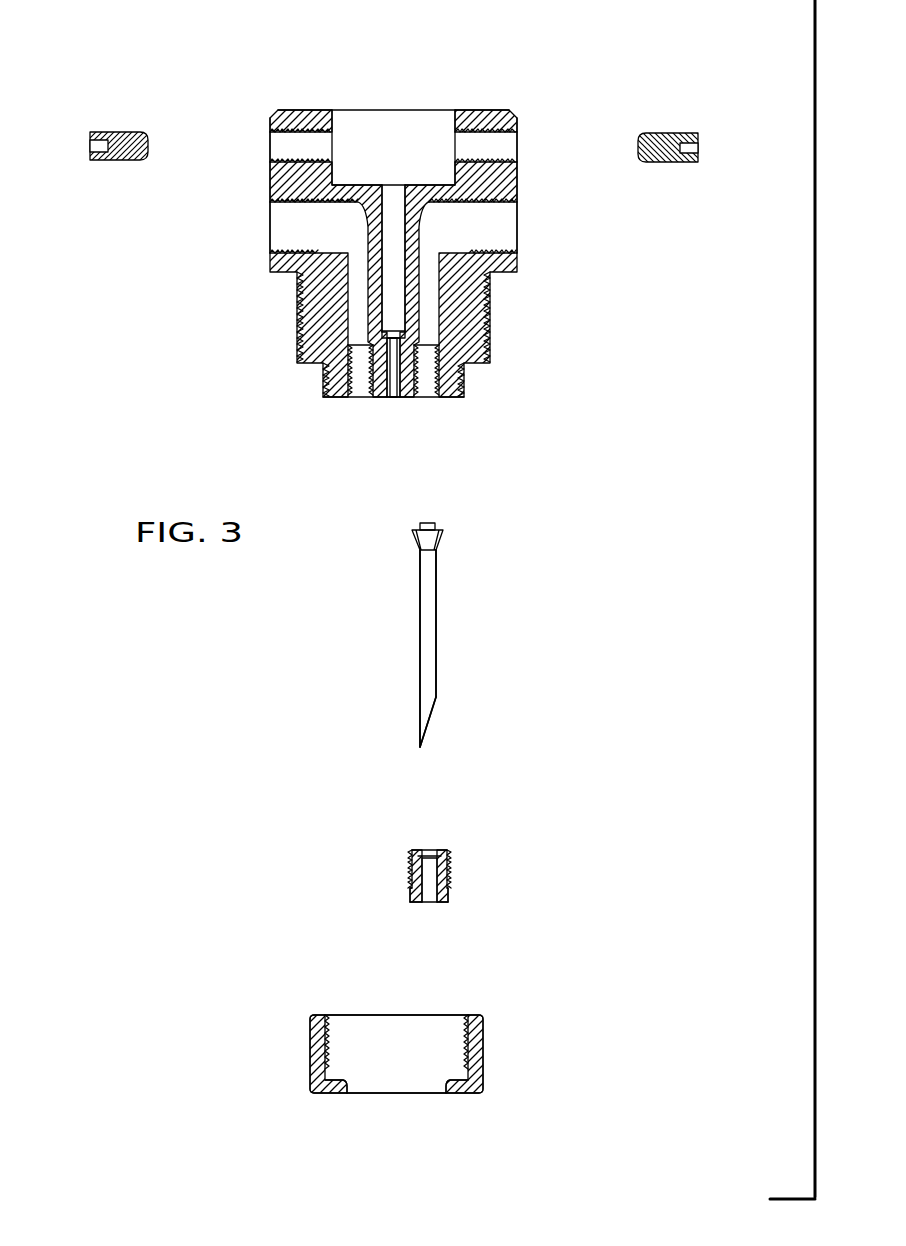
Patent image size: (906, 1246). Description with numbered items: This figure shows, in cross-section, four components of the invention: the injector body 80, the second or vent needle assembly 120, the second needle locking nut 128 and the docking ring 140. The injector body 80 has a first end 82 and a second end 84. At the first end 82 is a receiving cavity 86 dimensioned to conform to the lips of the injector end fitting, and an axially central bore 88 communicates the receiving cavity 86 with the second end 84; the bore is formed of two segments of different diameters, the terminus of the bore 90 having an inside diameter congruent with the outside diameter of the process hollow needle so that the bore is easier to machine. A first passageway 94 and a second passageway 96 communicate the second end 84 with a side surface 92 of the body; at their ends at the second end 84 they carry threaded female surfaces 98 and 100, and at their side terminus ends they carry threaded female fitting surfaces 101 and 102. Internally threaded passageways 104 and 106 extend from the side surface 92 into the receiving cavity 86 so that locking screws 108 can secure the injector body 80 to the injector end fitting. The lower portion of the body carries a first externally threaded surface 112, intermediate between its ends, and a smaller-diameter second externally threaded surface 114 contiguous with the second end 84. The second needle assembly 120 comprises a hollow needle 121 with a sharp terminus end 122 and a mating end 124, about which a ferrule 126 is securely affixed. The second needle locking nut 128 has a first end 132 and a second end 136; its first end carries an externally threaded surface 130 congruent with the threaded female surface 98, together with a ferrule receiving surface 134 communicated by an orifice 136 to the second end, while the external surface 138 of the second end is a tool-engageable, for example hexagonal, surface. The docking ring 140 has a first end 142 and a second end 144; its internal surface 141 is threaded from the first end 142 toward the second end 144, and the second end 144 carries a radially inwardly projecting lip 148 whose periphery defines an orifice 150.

The injector body 80 is at (597, 258).
The first end 82 is at (498, 110).
The second end 84 is at (458, 400).
The receiving cavity 86 is at (362, 128).
The axially central bore 88 is at (388, 227).
The terminus of bore 90 is at (389, 397).
The side surface 92 is at (517, 183).
The first passageway 94 is at (508, 218).
The second passageway 96 is at (300, 235).
The threaded female surface 98 is at (437, 396).
The threaded female surface 100 is at (350, 396).
The threaded female fitting surface 101 is at (500, 258).
The threaded female fitting surface 102 is at (290, 268).
The internally threaded passageway 104 is at (508, 132).
The internally threaded passageway 106 is at (280, 160).
The locking screw 108 is at (100, 132).
The first externally threaded surface 112 is at (487, 318).
The second externally threaded surface 114 is at (475, 382).
The second needle assembly 120 is at (457, 613).
The hollow needle 121 is at (437, 652).
The sharp terminus end 122 is at (420, 746).
The mating end 124 is at (431, 523).
The ferrule 126 is at (440, 540).
The second needle locking nut 128 is at (522, 860).
The externally threaded surface 130 is at (440, 868).
The first end 132 is at (441, 857).
The ferrule receiving surface 134 is at (421, 852).
The second end / orifice 136 is at (422, 870).
The external surface 138 is at (410, 893).
The docking ring 140 is at (507, 1045).
The internal surface 141 is at (323, 1027).
The first end 142 is at (480, 1018).
The second end 144 is at (470, 1094).
The radially inwardly projecting lip 148 is at (345, 1087).
The orifice 150 is at (385, 1058).